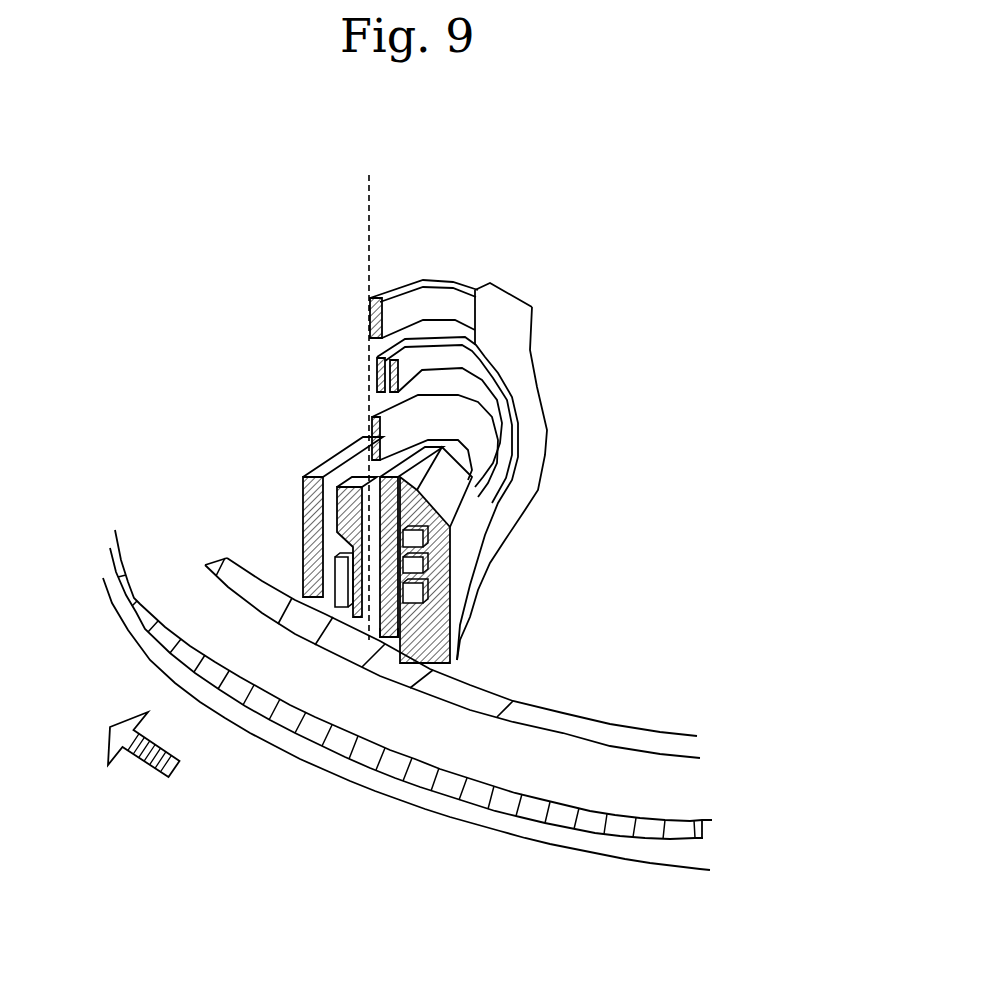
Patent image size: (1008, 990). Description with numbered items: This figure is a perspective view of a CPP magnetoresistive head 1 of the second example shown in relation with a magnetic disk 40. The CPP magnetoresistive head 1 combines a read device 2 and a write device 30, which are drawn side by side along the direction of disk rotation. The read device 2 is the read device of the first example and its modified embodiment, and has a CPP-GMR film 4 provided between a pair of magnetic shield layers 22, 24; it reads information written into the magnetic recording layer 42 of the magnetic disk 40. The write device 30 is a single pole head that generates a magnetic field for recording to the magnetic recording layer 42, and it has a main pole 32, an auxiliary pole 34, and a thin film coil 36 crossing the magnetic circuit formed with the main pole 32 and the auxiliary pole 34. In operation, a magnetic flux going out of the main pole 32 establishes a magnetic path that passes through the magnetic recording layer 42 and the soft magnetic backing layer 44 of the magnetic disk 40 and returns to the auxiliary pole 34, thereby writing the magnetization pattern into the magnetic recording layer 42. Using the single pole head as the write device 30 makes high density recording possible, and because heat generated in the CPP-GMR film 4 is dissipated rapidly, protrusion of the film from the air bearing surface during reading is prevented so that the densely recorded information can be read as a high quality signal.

The CPP magnetoresistive head 1 is at (687, 290).
The read device 2 is at (229, 389).
The CPP-GMR film 4 is at (303, 597).
The magnetic shield layer 22 is at (320, 473).
The magnetic shield layer 24 is at (411, 542).
The write device 30 is at (499, 436).
The main pole 32 is at (467, 592).
The auxiliary pole 34 is at (380, 632).
The thin film coil 36 is at (530, 396).
The magnetic disk 40 is at (312, 836).
The magnetic recording layer 42 is at (653, 830).
The soft magnetic backing layer 44 is at (410, 803).